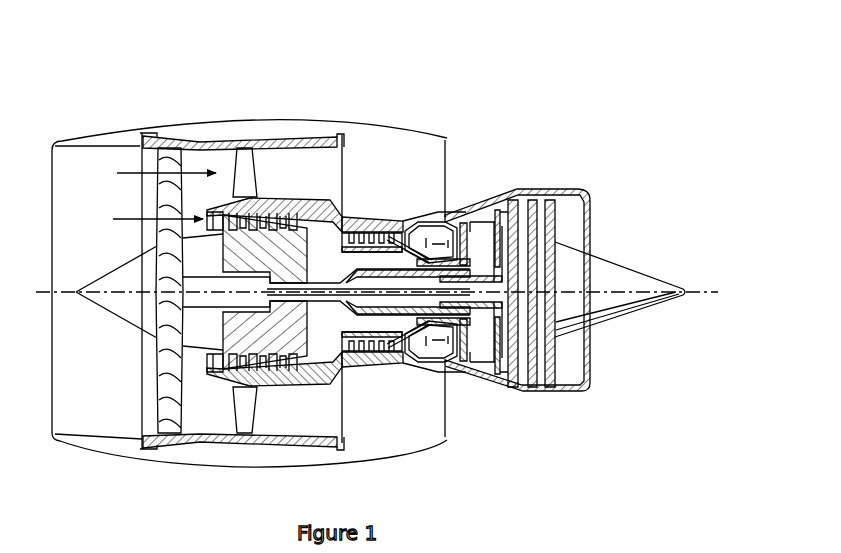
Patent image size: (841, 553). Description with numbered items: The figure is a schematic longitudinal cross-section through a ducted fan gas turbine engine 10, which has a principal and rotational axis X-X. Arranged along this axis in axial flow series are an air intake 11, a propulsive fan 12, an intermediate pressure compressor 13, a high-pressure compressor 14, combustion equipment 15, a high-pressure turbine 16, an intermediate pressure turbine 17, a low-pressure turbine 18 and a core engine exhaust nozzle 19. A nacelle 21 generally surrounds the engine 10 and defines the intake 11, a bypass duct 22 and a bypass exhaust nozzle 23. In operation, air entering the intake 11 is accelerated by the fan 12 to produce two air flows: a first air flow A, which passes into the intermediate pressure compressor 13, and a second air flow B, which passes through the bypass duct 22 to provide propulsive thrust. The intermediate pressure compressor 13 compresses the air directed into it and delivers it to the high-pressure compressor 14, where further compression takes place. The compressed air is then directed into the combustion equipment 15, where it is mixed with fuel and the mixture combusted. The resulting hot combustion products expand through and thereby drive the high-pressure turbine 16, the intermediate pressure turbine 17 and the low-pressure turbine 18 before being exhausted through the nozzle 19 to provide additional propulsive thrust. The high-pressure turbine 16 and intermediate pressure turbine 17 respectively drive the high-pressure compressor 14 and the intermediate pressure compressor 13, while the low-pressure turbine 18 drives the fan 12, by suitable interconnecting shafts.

The ducted fan gas turbine engine 10 is at (375, 242).
The air intake 11 is at (97, 143).
The propulsive fan 12 is at (160, 393).
The intermediate pressure compressor 13 is at (273, 366).
The high-pressure compressor 14 is at (369, 229).
The combustion equipment 15 is at (403, 361).
The high-pressure turbine 16 is at (457, 372).
The intermediate pressure turbine 17 is at (487, 210).
The low-pressure turbine 18 is at (517, 381).
The core engine exhaust nozzle 19 is at (582, 191).
The nacelle 21 is at (250, 77).
The bypass duct 22 is at (421, 177).
The bypass exhaust nozzle 23 is at (447, 138).